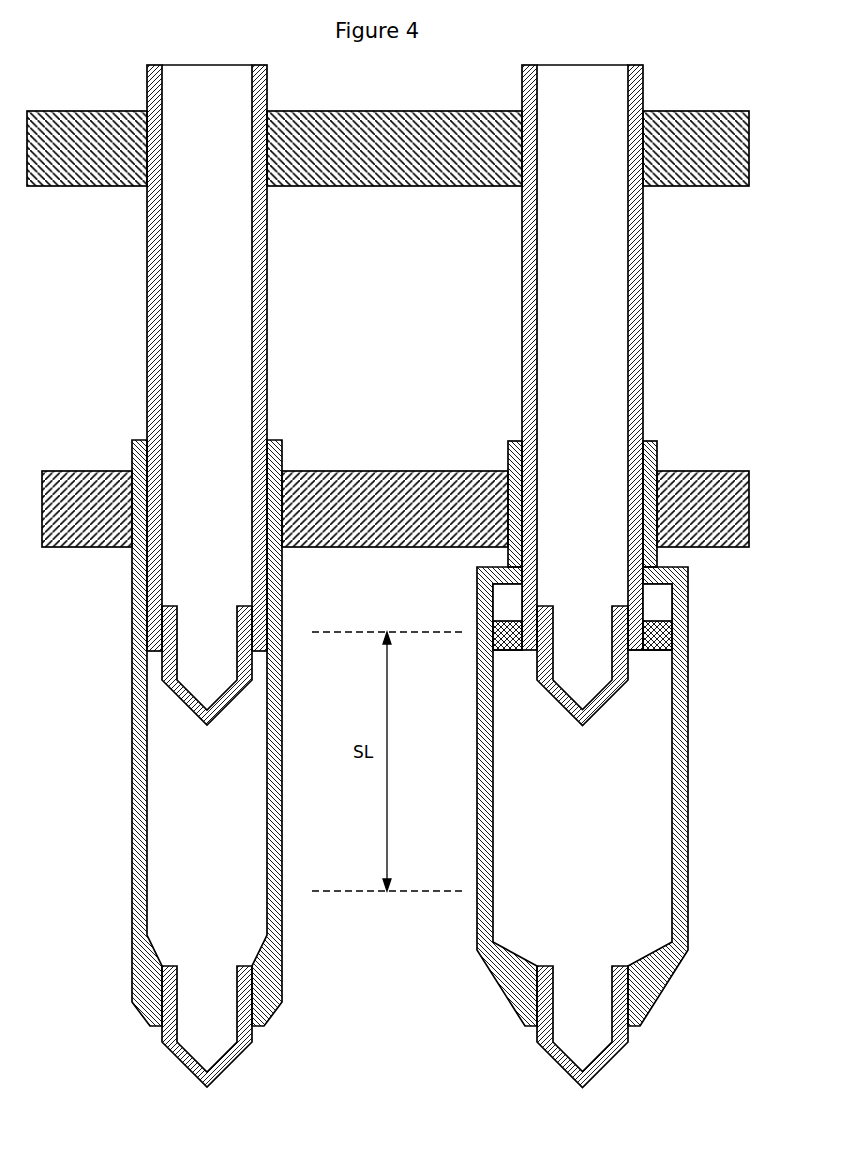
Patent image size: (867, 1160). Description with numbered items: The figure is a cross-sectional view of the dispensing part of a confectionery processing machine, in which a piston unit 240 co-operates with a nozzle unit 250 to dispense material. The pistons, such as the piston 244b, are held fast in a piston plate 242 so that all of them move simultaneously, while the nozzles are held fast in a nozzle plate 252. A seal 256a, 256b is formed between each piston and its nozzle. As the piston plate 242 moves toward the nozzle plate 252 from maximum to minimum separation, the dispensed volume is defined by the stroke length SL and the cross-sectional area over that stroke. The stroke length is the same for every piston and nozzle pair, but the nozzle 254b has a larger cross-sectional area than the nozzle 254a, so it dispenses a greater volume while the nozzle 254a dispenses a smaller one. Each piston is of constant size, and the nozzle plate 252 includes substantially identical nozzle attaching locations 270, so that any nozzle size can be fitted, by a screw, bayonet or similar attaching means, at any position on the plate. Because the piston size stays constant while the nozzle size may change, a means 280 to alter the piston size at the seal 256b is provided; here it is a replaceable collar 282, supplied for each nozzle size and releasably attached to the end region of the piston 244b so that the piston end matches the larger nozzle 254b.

The piston unit 240 is at (86, 128).
The piston plate 242 is at (397, 152).
The piston 244b is at (147, 245).
The nozzle unit 250 is at (82, 468).
The nozzle plate 252 is at (407, 523).
The nozzle 254a is at (132, 770).
The nozzle 254b is at (627, 788).
The seal 256a is at (147, 627).
The seal 256b is at (673, 629).
The nozzle attaching location 270 is at (664, 459).
The means to alter the piston size at the seal 280 is at (669, 660).
The replaceable collar 282 is at (492, 629).